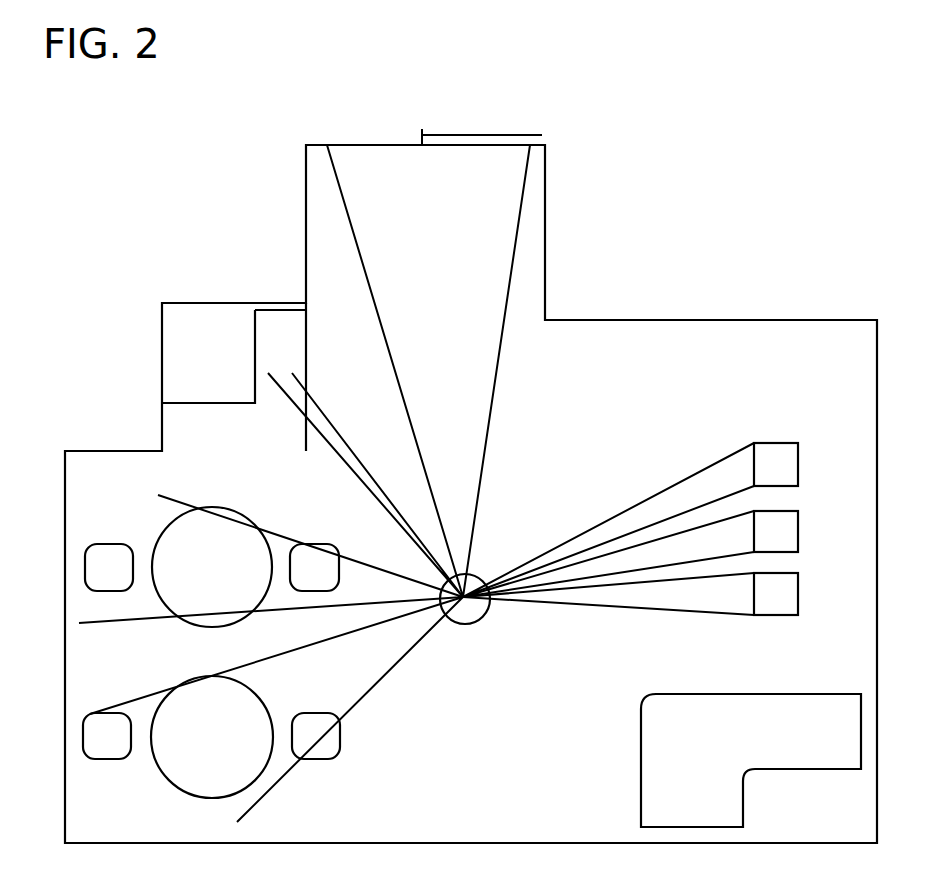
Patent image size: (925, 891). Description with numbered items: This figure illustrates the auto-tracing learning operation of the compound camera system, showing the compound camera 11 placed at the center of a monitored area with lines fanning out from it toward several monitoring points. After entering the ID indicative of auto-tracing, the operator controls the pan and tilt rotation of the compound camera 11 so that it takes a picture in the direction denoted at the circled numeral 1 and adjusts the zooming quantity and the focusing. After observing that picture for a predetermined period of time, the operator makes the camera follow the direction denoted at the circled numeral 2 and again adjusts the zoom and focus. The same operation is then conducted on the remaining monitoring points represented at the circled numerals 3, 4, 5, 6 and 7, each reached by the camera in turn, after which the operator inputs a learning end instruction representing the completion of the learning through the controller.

The monitoring point direction (circled numeral 1) 1 is at (428, 371).
The monitoring point direction (circled numeral 2) 2 is at (365, 467).
The monitoring point (circled numeral 3) 3 is at (271, 561).
The monitoring point (circled numeral 4) 4 is at (273, 709).
The monitoring point (circled numeral 5) 5 is at (651, 595).
The monitoring point (circled numeral 6) 6 is at (651, 554).
The monitoring point (circled numeral 7) 7 is at (651, 520).
The compound camera 11 is at (473, 625).